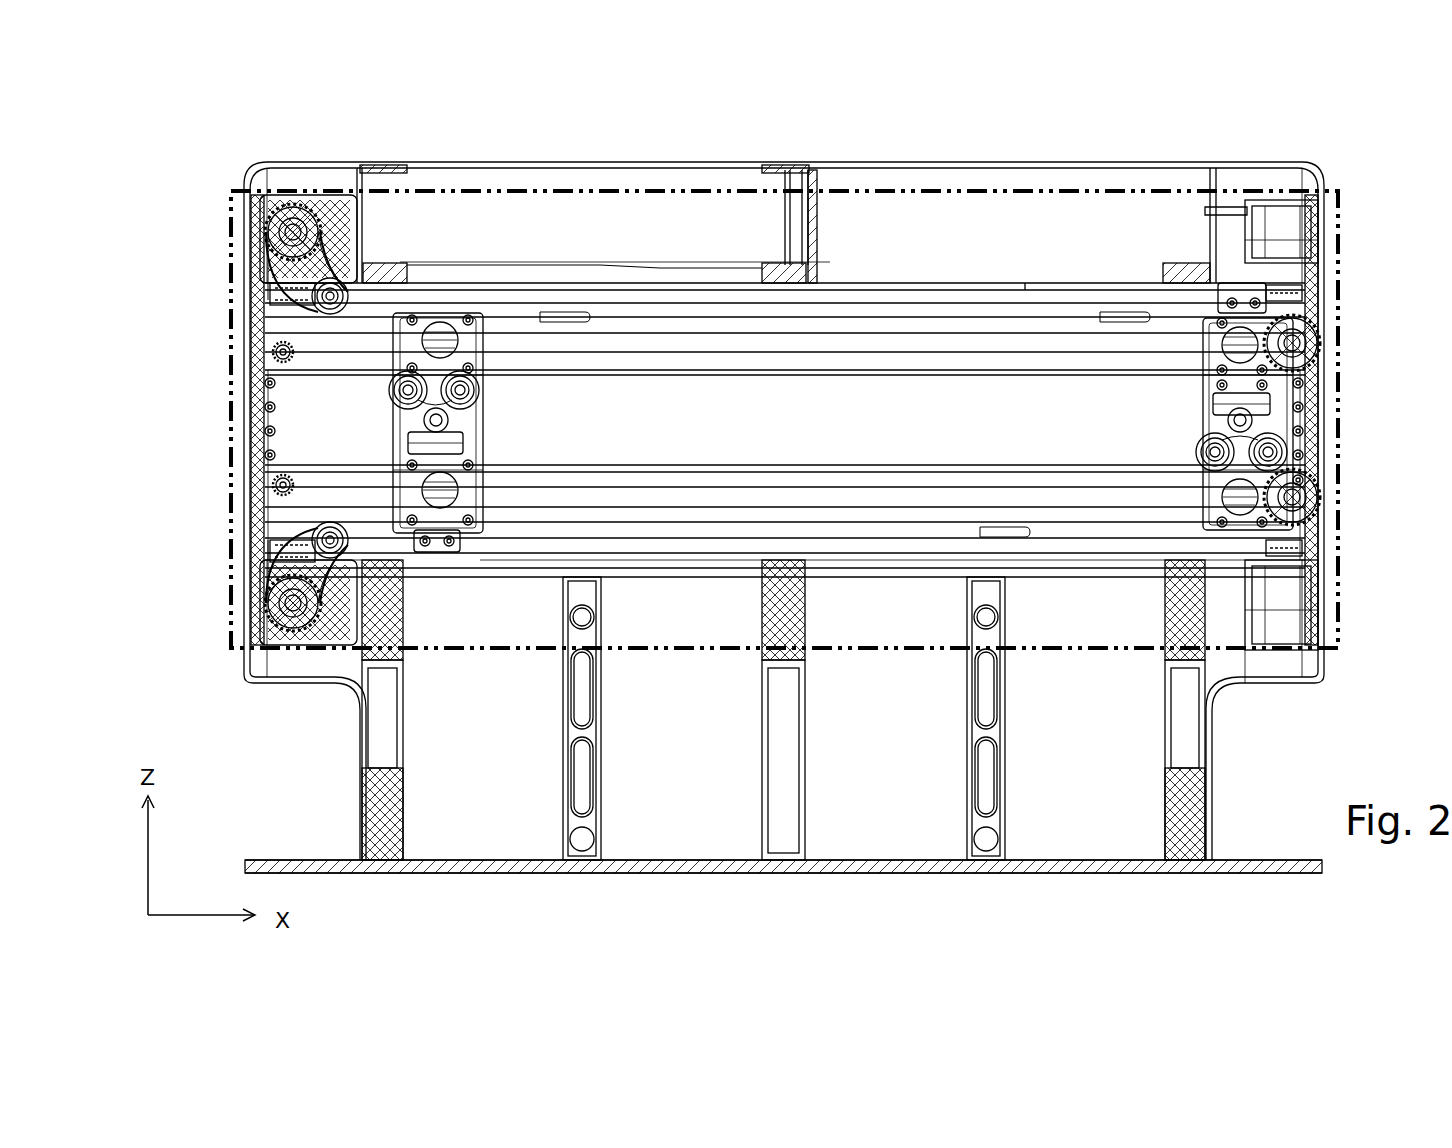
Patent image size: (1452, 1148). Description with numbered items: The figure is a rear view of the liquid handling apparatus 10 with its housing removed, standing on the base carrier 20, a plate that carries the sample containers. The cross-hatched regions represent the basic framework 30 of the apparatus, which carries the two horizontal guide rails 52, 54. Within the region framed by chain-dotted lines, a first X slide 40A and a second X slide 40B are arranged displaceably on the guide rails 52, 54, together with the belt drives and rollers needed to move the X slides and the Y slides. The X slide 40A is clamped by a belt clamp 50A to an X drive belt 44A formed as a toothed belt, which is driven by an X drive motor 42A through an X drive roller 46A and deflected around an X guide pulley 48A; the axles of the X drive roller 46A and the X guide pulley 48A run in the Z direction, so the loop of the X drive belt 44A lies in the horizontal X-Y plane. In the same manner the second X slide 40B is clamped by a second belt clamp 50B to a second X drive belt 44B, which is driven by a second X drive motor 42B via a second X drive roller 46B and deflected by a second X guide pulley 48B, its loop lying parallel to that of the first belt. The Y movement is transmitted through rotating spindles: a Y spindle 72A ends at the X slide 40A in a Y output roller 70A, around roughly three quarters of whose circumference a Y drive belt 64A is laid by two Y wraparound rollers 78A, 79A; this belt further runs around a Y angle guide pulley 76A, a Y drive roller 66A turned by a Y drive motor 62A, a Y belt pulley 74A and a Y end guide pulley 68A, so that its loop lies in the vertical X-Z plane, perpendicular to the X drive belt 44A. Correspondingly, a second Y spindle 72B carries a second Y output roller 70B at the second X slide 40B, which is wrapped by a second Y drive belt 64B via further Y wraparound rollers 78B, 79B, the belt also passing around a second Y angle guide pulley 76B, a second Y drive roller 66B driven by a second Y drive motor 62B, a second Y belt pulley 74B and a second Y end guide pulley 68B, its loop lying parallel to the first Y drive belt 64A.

The liquid handling apparatus 10 is at (1032, 128).
The base carrier 20 is at (243, 858).
The basic framework 30 is at (1193, 792).
The X slide 40A is at (395, 505).
The second X slide 40B is at (1230, 325).
The X drive motor 42A is at (1305, 620).
The second X drive motor 42B is at (1290, 213).
The X drive belt 44A is at (1070, 548).
The second X drive belt 44B is at (1030, 300).
The X drive roller 46A is at (1293, 548).
The second X drive roller 46B is at (1272, 295).
The X guide pulley 48A is at (283, 548).
The second X guide pulley 48B is at (283, 292).
The belt clamp 50A is at (445, 552).
The second belt clamp 50B is at (1242, 290).
The guide rail 52 is at (688, 340).
The guide rail 54 is at (812, 495).
The Y drive motor 62A is at (345, 215).
The second Y drive motor 62B is at (340, 640).
The Y drive belt 64A is at (650, 365).
The second Y drive belt 64B is at (530, 472).
The Y drive roller 66A is at (293, 226).
The second Y drive roller 66B is at (290, 605).
The Y end guide pulley 68A is at (1305, 346).
The second Y end guide pulley 68B is at (1303, 512).
The Y output roller 70A is at (448, 417).
The second Y output roller 70B is at (1243, 420).
The Y spindle 72A is at (437, 410).
The second Y spindle 72B is at (1247, 425).
The Y belt pulley 74A is at (342, 278).
The second Y belt pulley 74B is at (330, 556).
The Y angle guide pulley 76A is at (283, 352).
The second Y angle guide pulley 76B is at (283, 485).
The Y wraparound roller 78A is at (392, 392).
The Y wraparound roller 78B is at (1282, 454).
The Y wraparound roller 79A is at (472, 392).
The Y wraparound roller 79B is at (1205, 452).